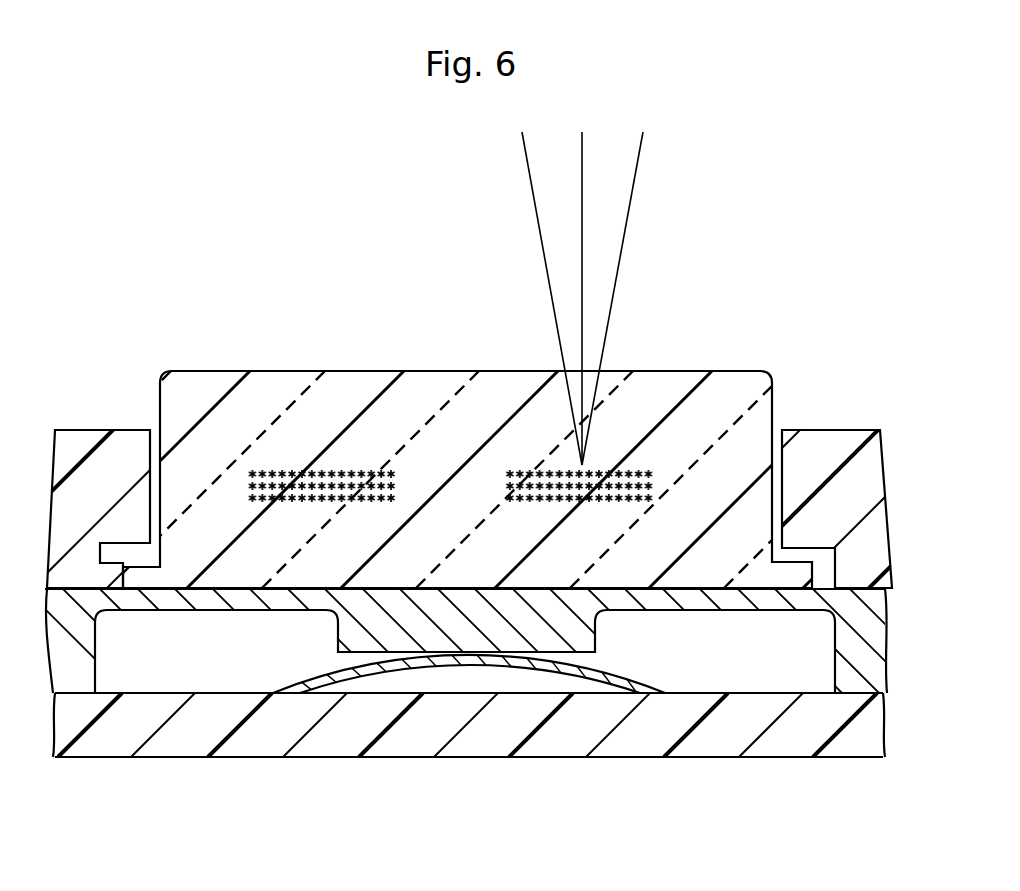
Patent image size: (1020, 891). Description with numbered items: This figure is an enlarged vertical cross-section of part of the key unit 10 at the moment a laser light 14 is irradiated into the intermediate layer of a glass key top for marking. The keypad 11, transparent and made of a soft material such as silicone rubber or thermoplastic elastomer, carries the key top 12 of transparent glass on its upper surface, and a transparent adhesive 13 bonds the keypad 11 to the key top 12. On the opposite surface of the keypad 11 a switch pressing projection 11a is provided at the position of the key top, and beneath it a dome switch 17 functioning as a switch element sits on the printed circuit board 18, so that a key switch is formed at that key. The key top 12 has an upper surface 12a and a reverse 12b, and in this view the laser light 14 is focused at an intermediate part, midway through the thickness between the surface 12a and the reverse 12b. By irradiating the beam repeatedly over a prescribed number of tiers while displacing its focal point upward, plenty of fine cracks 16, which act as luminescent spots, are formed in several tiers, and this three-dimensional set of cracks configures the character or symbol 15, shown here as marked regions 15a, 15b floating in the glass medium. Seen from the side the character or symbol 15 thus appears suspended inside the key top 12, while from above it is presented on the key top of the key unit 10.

The key unit 10 is at (684, 250).
The keypad 11 is at (83, 675).
The switch pressing projection 11a is at (588, 638).
The key top 12 is at (773, 407).
The surface of key top 12a is at (647, 372).
The reverse of key top 12b is at (211, 590).
The transparent adhesive 13 is at (728, 588).
The laser light 14 is at (613, 296).
The character or symbol 15 is at (450, 359).
The first phosphor layer 15a is at (339, 474).
The second phosphor layer 15b is at (520, 468).
The fine cracks 16 is at (292, 473).
The dome switch 17 is at (513, 660).
The printed circuit board 18 is at (253, 748).